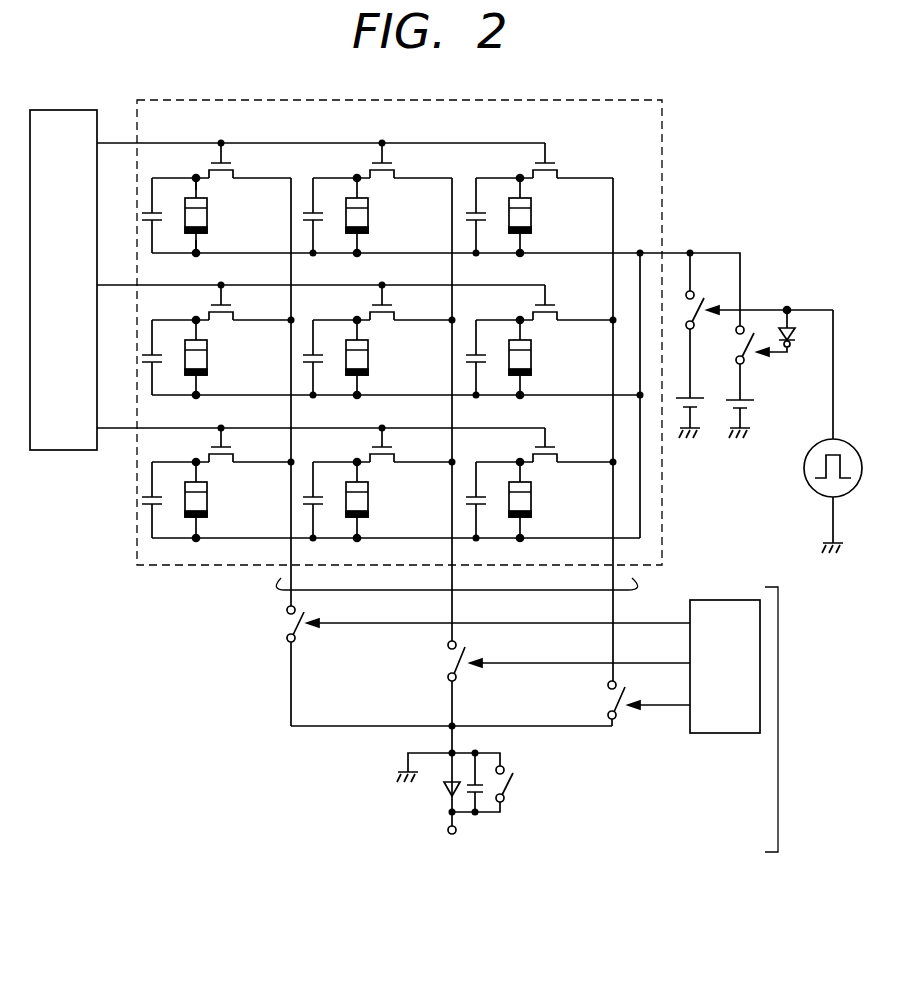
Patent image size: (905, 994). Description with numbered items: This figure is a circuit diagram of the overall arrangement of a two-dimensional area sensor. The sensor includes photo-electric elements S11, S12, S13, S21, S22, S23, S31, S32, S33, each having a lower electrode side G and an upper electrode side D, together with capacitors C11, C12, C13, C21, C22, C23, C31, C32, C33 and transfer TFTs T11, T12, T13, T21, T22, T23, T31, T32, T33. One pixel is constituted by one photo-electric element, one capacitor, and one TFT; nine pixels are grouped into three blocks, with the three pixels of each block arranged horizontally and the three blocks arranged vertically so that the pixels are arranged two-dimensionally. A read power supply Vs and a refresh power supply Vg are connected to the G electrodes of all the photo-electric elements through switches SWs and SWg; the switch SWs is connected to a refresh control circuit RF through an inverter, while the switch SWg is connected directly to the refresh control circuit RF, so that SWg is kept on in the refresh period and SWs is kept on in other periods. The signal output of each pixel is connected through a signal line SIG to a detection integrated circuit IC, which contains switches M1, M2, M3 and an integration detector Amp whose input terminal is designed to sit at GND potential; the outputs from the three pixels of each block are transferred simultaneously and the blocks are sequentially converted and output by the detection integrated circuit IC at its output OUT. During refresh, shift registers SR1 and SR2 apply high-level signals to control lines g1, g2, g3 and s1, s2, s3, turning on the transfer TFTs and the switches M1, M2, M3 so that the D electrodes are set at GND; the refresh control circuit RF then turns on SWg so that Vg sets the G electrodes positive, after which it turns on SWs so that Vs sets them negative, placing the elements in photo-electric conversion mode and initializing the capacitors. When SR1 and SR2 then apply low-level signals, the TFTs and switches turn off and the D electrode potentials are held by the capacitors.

The shift register SR1 is at (63, 280).
The shift register SR2 is at (725, 666).
The control line g1 is at (321, 129).
The control line g2 is at (321, 271).
The control line g3 is at (321, 414).
The capacitor C11 is at (165, 201).
The capacitor C12 is at (326, 201).
The capacitor C13 is at (489, 201).
The capacitor C21 is at (165, 343).
The capacitor C22 is at (326, 343).
The capacitor C23 is at (489, 343).
The capacitor C31 is at (165, 485).
The capacitor C32 is at (326, 485).
The capacitor C33 is at (489, 485).
The transfer TFT T11 is at (241, 160).
The transfer TFT T12 is at (402, 160).
The transfer TFT T13 is at (565, 160).
The transfer TFT T21 is at (241, 302).
The transfer TFT T22 is at (402, 302).
The transfer TFT T23 is at (565, 302).
The transfer TFT T31 is at (241, 445).
The transfer TFT T32 is at (402, 445).
The transfer TFT T33 is at (565, 445).
The photo-electric element S11 is at (217, 216).
The photo-electric element S12 is at (378, 216).
The photo-electric element S13 is at (541, 216).
The photo-electric element S21 is at (217, 358).
The photo-electric element S22 is at (378, 358).
The photo-electric element S23 is at (541, 358).
The photo-electric element S31 is at (217, 500).
The photo-electric element S32 is at (378, 500).
The photo-electric element S33 is at (541, 500).
The upper electrode side D is at (180, 191).
The lower electrode side G is at (179, 242).
The switch SWg is at (712, 325).
The switch SWs is at (768, 363).
The refresh power supply Vg is at (698, 406).
The read power supply Vs is at (755, 416).
The refresh control circuit RF is at (831, 431).
The signal line SIG is at (433, 588).
The switch M1 is at (308, 666).
The switch M2 is at (471, 726).
The switch M3 is at (631, 709).
The control line s1 is at (498, 614).
The control line s2 is at (580, 654).
The control line s3 is at (659, 696).
The detection integrated circuit IC is at (789, 719).
The integration detector Amp is at (507, 782).
The output terminal OUT is at (448, 838).